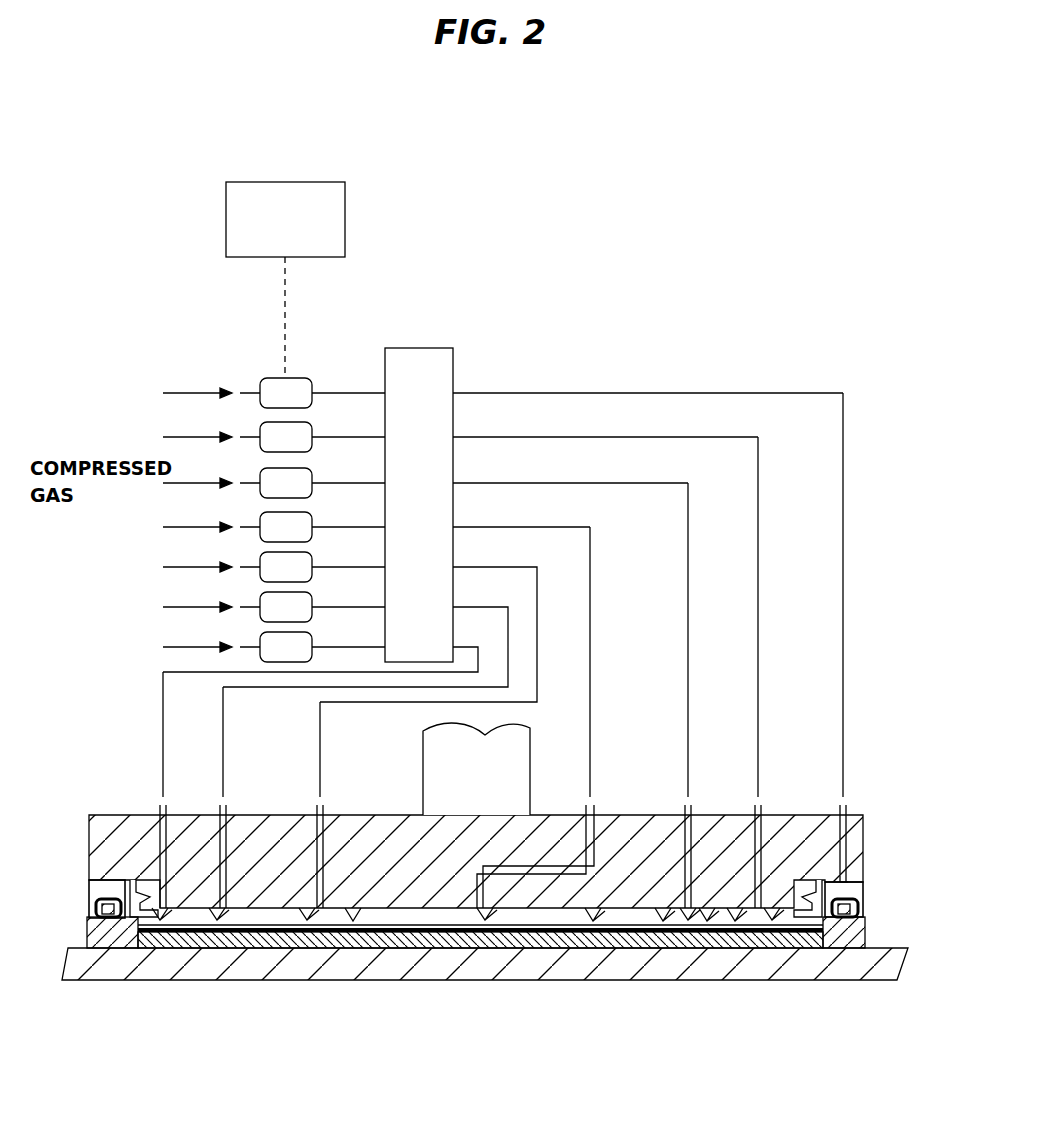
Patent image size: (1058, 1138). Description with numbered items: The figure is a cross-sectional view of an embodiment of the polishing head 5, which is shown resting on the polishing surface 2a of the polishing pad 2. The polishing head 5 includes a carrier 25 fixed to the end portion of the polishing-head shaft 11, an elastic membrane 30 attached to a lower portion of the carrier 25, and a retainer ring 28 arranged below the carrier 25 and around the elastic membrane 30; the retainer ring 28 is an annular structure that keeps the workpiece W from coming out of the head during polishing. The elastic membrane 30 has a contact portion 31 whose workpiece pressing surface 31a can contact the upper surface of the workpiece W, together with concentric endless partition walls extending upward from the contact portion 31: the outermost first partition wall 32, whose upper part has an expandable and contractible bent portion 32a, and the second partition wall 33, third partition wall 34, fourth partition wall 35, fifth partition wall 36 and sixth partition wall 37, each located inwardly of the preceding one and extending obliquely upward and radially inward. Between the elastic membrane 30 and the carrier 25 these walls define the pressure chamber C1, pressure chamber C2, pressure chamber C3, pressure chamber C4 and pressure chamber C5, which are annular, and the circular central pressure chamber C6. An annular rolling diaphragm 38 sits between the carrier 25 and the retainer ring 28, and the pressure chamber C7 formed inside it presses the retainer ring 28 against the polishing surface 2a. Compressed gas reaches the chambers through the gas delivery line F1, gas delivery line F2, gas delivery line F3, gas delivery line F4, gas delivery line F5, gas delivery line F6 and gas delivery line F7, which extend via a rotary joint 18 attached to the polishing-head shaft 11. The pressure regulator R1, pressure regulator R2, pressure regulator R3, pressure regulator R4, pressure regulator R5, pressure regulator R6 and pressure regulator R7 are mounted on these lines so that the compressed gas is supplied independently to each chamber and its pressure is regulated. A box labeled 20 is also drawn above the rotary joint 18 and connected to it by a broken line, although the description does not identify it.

The polishing pad 2 is at (482, 956).
The polishing surface 2a is at (86, 938).
The polishing head 5 is at (491, 717).
The polishing-head shaft 11 is at (530, 740).
The rotary joint 18 is at (412, 348).
The controller 20 is at (270, 181).
The carrier 25 is at (388, 857).
The retainer ring 28 is at (867, 928).
The elastic membrane 30 is at (542, 940).
The contact portion 31 is at (480, 975).
The workpiece pressing surface 31a is at (353, 918).
The first partition wall 32 is at (815, 918).
The bent portion 32a is at (841, 884).
The second partition wall 33 is at (800, 918).
The third partition wall 34 is at (735, 920).
The fourth partition wall 35 is at (707, 920).
The fifth partition wall 36 is at (663, 920).
The sixth partition wall 37 is at (593, 920).
The rolling diaphragm 38 is at (864, 908).
The workpiece W is at (442, 930).
The pressure chamber C1 is at (160, 920).
The pressure chamber C2 is at (772, 920).
The pressure chamber C3 is at (217, 920).
The pressure chamber C4 is at (688, 920).
The pressure chamber C5 is at (307, 920).
The pressure chamber C6 is at (485, 920).
The pressure chamber C7 is at (850, 890).
The gas delivery line F1 is at (157, 813).
The gas delivery line F2 is at (763, 813).
The gas delivery line F3 is at (218, 813).
The gas delivery line F4 is at (692, 813).
The gas delivery line F5 is at (317, 813).
The gas delivery line F6 is at (602, 813).
The gas delivery line F7 is at (850, 813).
The pressure regulator R1 is at (274, 647).
The pressure regulator R2 is at (274, 437).
The pressure regulator R3 is at (274, 607).
The pressure regulator R4 is at (274, 483).
The pressure regulator R5 is at (274, 567).
The pressure regulator R6 is at (274, 527).
The pressure regulator R7 is at (274, 393).